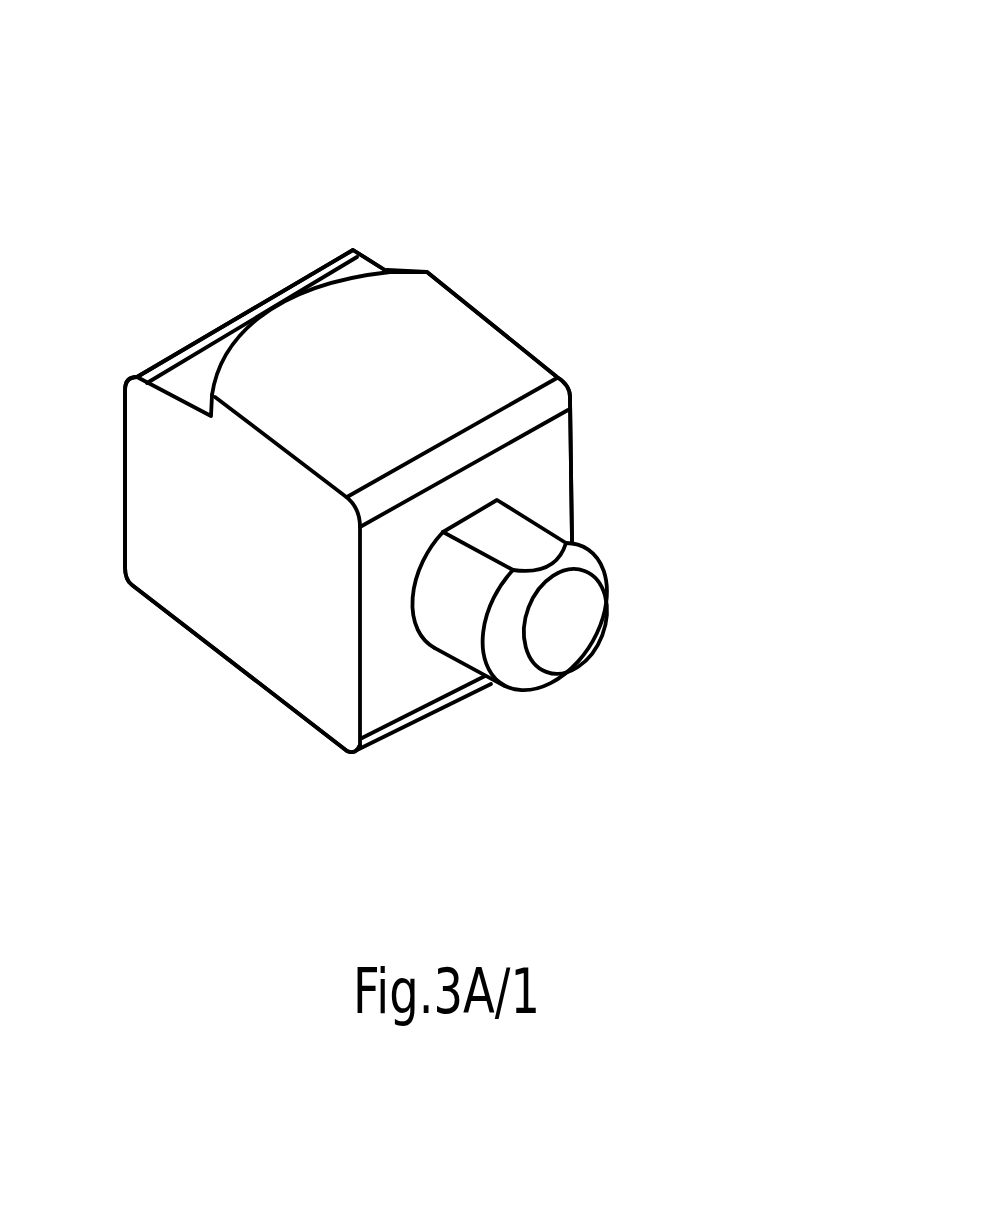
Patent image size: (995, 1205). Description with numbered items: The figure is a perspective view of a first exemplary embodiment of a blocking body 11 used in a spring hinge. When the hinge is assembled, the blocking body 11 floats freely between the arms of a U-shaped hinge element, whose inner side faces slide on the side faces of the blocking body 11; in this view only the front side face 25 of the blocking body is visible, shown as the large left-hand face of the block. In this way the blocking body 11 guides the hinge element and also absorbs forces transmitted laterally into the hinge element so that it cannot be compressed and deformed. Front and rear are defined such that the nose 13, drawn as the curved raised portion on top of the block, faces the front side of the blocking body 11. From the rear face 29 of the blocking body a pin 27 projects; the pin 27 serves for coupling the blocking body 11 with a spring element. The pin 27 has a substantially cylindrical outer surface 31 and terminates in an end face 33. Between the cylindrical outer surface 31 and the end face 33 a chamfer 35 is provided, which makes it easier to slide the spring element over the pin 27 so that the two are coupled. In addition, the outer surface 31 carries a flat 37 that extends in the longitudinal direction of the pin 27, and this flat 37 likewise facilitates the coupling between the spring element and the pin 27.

The blocking body 11 is at (567, 218).
The nose 13 is at (302, 313).
The front side face 25 is at (228, 582).
The pin 27 is at (460, 630).
The rear face 29 is at (538, 463).
The cylindrical outer surface 31 is at (450, 610).
The end face 33 is at (577, 618).
The chamfer 35 is at (573, 558).
The flat 37 is at (507, 541).